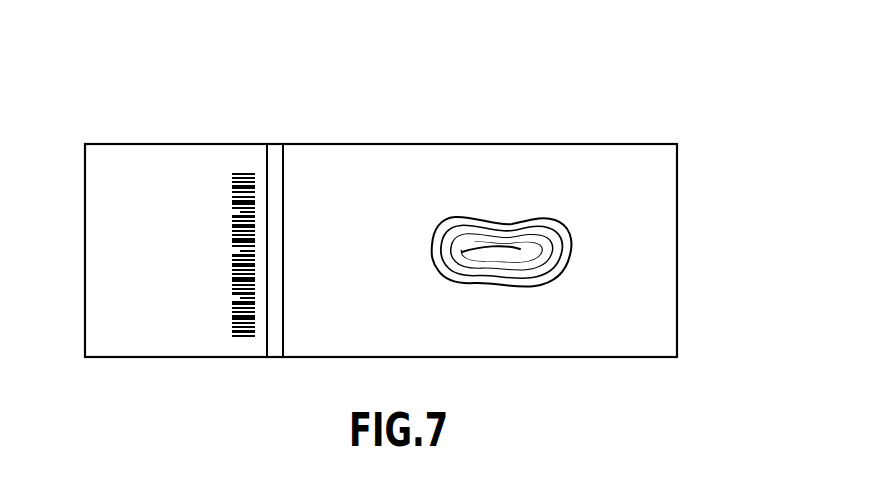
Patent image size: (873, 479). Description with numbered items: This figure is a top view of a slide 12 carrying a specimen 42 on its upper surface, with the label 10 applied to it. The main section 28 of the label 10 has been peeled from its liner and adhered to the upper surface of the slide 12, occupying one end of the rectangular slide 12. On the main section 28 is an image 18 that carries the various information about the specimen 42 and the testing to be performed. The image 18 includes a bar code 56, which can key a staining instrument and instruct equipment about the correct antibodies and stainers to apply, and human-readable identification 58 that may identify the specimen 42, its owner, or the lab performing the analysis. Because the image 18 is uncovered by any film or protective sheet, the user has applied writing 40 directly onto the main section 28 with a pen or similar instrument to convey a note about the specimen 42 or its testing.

The label 10 is at (87, 101).
The slide 12 is at (477, 143).
The image 18 is at (191, 189).
The main section 28 is at (239, 158).
The writing 40 is at (101, 273).
The specimen 42 is at (553, 223).
The bar code 56 is at (243, 338).
The identification 58 is at (186, 330).